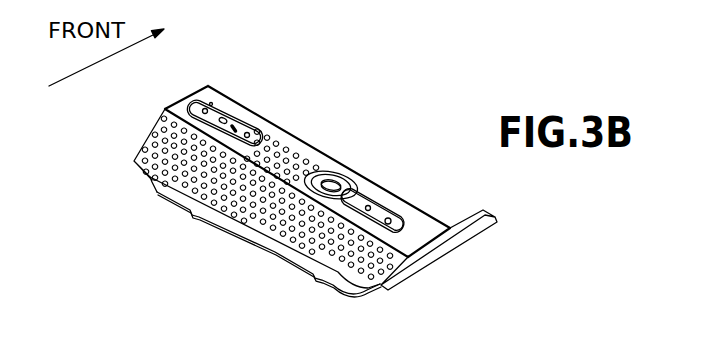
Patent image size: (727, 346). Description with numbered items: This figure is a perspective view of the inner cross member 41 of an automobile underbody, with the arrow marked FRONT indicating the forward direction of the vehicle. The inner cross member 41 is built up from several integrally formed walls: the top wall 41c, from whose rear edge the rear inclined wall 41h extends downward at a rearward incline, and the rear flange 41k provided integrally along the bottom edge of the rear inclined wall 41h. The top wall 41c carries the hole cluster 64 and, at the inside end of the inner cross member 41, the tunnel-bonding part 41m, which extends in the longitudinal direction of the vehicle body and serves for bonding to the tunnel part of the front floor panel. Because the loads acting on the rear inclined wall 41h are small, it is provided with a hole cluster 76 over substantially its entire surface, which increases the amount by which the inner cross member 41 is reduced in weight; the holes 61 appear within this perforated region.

The inner cross member 41 is at (328, 118).
The top wall 41c is at (262, 113).
The rear inclined wall 41h is at (155, 133).
The rear flange 41k is at (267, 243).
The tunnel-bonding part 41m is at (403, 267).
The ventilation holes 61 is at (180, 170).
The hole cluster 64 is at (306, 150).
The hole cluster 76 is at (243, 211).